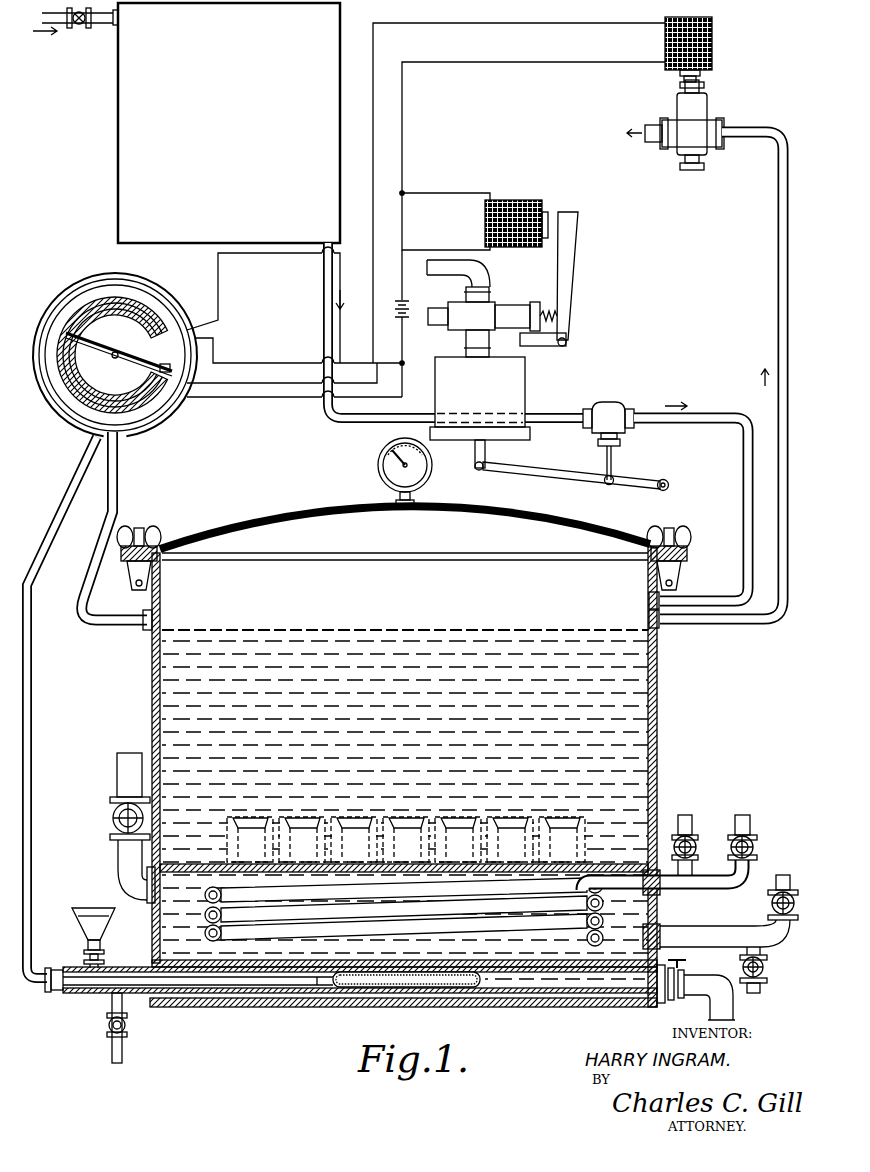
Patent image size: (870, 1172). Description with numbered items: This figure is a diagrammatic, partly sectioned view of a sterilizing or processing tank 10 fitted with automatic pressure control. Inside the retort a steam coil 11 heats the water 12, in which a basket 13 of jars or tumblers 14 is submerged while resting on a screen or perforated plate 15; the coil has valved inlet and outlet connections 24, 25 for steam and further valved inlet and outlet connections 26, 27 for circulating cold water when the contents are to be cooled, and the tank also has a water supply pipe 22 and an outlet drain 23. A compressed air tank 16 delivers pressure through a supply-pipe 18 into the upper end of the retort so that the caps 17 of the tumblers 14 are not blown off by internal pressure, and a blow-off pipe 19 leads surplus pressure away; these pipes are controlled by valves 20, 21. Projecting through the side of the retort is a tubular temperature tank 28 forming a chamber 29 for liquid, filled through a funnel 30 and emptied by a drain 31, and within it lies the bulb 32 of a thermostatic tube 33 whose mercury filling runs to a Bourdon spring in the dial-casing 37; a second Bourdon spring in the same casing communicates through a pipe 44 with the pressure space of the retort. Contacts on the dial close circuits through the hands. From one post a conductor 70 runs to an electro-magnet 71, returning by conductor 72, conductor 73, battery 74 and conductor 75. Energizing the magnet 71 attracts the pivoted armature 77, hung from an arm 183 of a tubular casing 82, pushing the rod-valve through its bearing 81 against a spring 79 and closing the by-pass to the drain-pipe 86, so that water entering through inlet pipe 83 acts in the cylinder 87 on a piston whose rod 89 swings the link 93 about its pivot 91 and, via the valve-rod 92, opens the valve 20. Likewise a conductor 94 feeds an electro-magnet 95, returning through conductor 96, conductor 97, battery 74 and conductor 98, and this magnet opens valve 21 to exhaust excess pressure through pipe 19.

The sterilizing or processing tank 10 is at (373, 756).
The steam coil 11 is at (404, 911).
The water 12 is at (622, 707).
The basket 13 is at (240, 843).
The jars or tumblers 14 is at (459, 844).
The screen or perforated plate 15 is at (270, 875).
The compressed air tank 16 is at (186, 123).
The caps 17 is at (290, 818).
The supply-pipe 18 is at (742, 492).
The blow-off pipe 19 is at (776, 320).
The valve 20 is at (618, 393).
The valve 21 is at (710, 110).
The supply pipe 22 is at (133, 755).
The outlet drain 23 is at (723, 1006).
The valved inlet connection 24 is at (738, 822).
The valved outlet connection 25 is at (787, 880).
The valved inlet connection 26 is at (683, 823).
The valved outlet connection 27 is at (760, 987).
The tubular temperature tank 28 is at (328, 992).
The chamber 29 is at (518, 990).
The funnel 30 is at (112, 930).
The drain 31 is at (124, 1045).
The bulb 32 is at (433, 990).
The thermostatic tube 33 is at (34, 667).
The dial-casing 37 is at (115, 347).
The pipe 44 is at (123, 478).
The conductor 70 is at (222, 283).
The electro-magnet 71 is at (520, 200).
The conductor 72 is at (445, 204).
The conductor 73 is at (500, 193).
The battery 74 is at (407, 318).
The conductor 75 is at (286, 359).
The pivoted armature 77 is at (572, 282).
The spring 79 is at (560, 312).
The bearing 81 is at (520, 304).
The tubular casing 82 is at (471, 322).
The inlet pipe 83 is at (492, 270).
The drain-pipe 86 is at (437, 307).
The cylinder 87 is at (480, 398).
The rod 89 is at (488, 452).
The pivot 91 is at (670, 480).
The valve-rod 92 is at (616, 462).
The link 93 is at (572, 460).
The conductor 94 is at (228, 380).
The electro-magnet 95 is at (713, 46).
The conductor 96 is at (403, 124).
The conductor 97 is at (403, 231).
The conductor 98 is at (230, 403).
The arm 183 is at (556, 348).